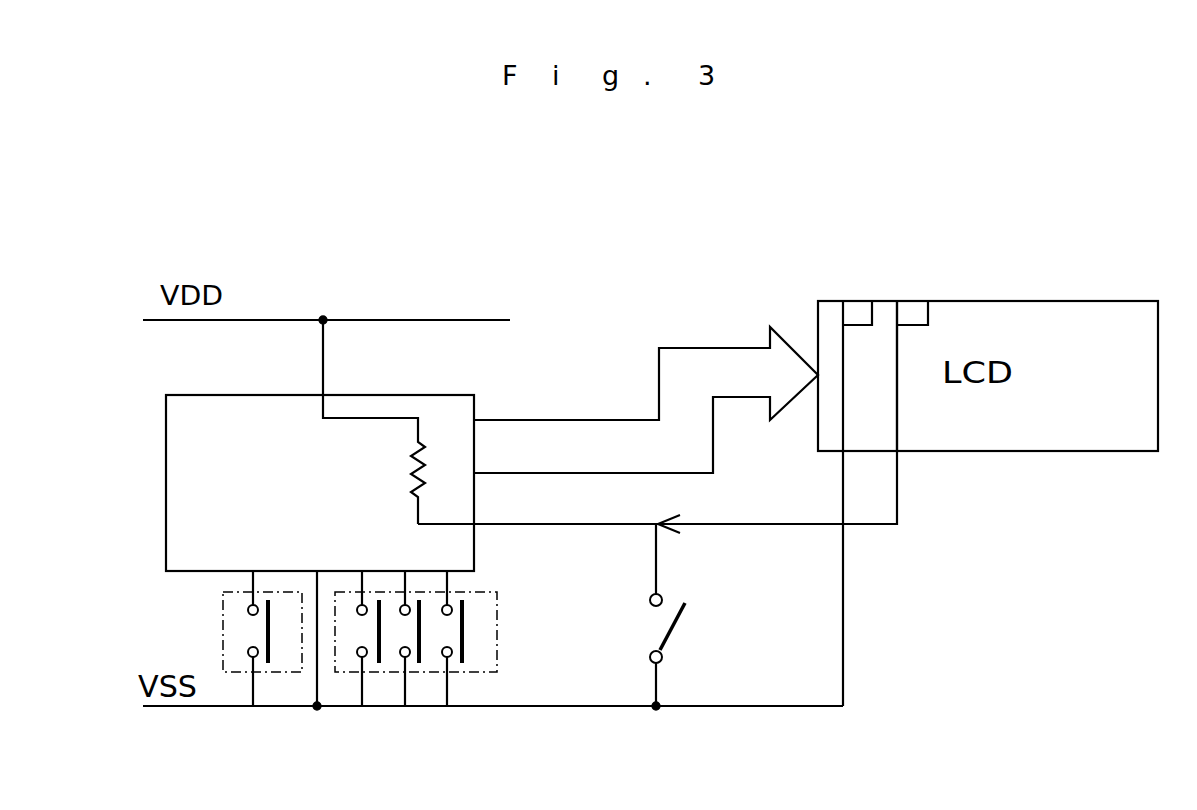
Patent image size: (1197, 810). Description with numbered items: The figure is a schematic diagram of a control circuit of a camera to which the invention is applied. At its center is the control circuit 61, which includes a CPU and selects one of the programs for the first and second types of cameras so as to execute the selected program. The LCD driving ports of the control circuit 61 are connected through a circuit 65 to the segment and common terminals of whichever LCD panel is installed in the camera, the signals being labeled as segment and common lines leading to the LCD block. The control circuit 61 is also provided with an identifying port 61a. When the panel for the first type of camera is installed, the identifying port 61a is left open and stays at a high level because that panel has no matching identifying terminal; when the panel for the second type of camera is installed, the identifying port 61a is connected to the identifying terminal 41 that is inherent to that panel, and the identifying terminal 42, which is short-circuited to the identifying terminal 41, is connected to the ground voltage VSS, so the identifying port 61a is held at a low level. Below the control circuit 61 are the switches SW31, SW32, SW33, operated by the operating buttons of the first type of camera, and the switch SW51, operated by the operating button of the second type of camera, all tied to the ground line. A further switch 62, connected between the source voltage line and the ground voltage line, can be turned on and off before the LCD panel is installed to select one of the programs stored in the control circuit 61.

The control circuit 61 is at (166, 502).
The identifying port 61a is at (474, 526).
The circuit 65 is at (595, 420).
The identifying terminal 41 is at (913, 301).
The identifying terminal 42 is at (858, 301).
The switch SW51 is at (273, 632).
The switch SW31 is at (360, 627).
The switch SW32 is at (402, 632).
The switch SW33 is at (470, 627).
The switch 62 is at (680, 630).